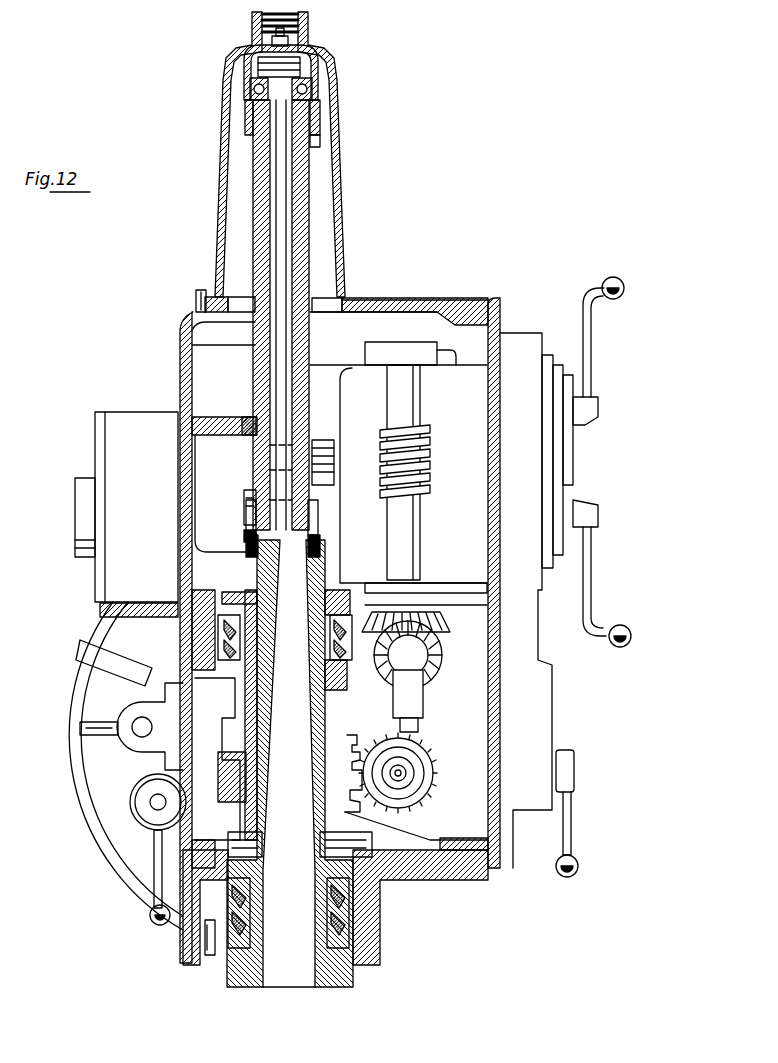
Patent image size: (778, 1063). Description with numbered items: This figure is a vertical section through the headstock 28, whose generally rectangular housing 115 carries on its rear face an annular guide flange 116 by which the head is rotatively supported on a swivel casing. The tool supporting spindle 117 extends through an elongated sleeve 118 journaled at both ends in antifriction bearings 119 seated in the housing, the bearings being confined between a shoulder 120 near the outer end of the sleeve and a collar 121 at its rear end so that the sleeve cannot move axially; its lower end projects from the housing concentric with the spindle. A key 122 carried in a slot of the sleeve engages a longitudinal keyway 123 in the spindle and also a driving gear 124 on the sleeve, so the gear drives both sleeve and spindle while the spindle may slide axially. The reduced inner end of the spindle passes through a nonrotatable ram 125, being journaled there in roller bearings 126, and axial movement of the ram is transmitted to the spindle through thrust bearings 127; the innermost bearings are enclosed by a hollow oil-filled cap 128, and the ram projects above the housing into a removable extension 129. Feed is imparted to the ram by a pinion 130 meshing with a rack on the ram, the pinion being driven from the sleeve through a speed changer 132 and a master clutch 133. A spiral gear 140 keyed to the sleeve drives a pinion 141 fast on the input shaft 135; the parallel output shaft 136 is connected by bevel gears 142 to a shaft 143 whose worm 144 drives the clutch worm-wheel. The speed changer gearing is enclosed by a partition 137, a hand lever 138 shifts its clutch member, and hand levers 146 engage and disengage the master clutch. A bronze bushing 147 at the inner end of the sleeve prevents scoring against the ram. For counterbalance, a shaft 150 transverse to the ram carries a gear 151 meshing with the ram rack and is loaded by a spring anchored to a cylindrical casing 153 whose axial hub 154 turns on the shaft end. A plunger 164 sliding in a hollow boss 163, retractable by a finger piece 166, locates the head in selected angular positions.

The headstock 28 is at (168, 318).
The housing 115 is at (441, 304).
The annular guide flange 116 is at (110, 772).
The tool supporting spindle 117 is at (281, 985).
The sleeve 118 is at (256, 698).
The antifriction bearings 119 is at (230, 652).
The shoulder 120 is at (246, 945).
The collar 121 is at (338, 600).
The key 122 is at (257, 845).
The longitudinal spline or keyway 123 is at (273, 847).
The driving gear 124 is at (372, 850).
The ram 125 is at (306, 338).
The roller bearings 126 is at (300, 120).
The thrust bearings 127 is at (305, 88).
The hollow cap 128 is at (318, 68).
The extension 129 is at (330, 50).
The pinion 130 is at (322, 463).
The speed changer 132 is at (362, 707).
The master clutch 133 is at (436, 357).
The input shaft 135 is at (400, 776).
The output shaft 136 is at (438, 668).
The partition 137 is at (366, 688).
The hand lever 138 is at (572, 838).
The spiral gear 140 is at (228, 802).
The pinion 141 is at (425, 773).
The bevel gears 142 is at (446, 635).
The shaft 143 is at (422, 534).
The worm 144 is at (428, 472).
The hand levers 146 is at (592, 330).
The removable bushing 147 is at (258, 592).
The shaft 150 is at (250, 500).
The gear 151 is at (250, 540).
The cylindrical casing 153 is at (128, 420).
The axial hub 154 is at (74, 530).
The hollow boss 163 is at (148, 752).
The plunger 164 is at (142, 717).
The finger piece 166 is at (80, 729).